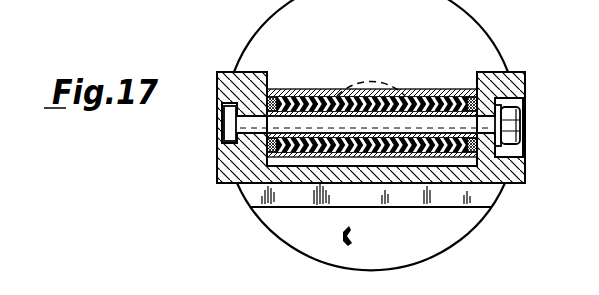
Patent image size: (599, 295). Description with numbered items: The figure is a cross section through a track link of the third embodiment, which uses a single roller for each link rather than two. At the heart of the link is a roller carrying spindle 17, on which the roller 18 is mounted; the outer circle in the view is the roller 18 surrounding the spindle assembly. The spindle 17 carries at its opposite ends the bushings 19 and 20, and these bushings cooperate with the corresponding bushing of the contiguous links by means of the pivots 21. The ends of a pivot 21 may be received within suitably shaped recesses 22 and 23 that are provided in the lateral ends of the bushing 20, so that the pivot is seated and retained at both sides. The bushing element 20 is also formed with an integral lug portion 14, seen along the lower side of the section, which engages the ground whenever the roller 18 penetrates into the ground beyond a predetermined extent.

The lug portion 14 is at (325, 197).
The roller carrying spindle 17 is at (423, 92).
The roller 18 is at (382, 21).
The bushing 19 is at (312, 92).
The bushing 20 is at (415, 178).
The pivot 21 is at (368, 122).
The recess 22 is at (221, 135).
The recess 23 is at (521, 150).